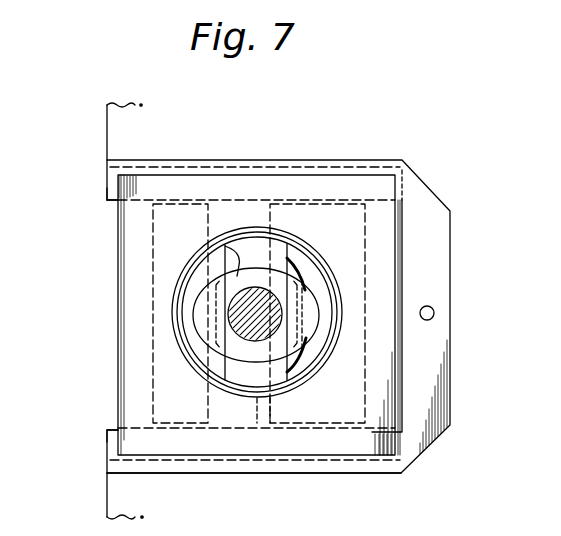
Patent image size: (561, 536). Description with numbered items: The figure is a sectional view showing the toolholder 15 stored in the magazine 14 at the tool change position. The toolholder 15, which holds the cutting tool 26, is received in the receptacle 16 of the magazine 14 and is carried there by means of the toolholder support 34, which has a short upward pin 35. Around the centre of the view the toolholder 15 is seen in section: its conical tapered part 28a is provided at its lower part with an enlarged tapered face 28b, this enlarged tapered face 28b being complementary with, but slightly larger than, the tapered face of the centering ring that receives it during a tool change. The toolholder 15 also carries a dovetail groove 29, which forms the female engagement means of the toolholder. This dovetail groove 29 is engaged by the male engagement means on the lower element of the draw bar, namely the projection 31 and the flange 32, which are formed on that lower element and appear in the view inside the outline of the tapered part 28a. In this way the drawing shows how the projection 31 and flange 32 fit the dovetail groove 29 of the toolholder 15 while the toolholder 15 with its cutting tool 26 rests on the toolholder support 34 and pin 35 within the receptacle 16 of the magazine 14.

The magazine 14 is at (107, 128).
The toolholder 15 is at (163, 383).
The receptacle 16 is at (107, 200).
The cutting tool 26 is at (243, 412).
The conical tapered part 28a is at (307, 289).
The enlarged tapered face 28b is at (340, 296).
The dovetail groove 29 is at (296, 381).
The projection 31 is at (261, 290).
The flange 32 is at (211, 241).
The toolholder support 34 is at (330, 466).
The short upward pin 35 is at (434, 313).